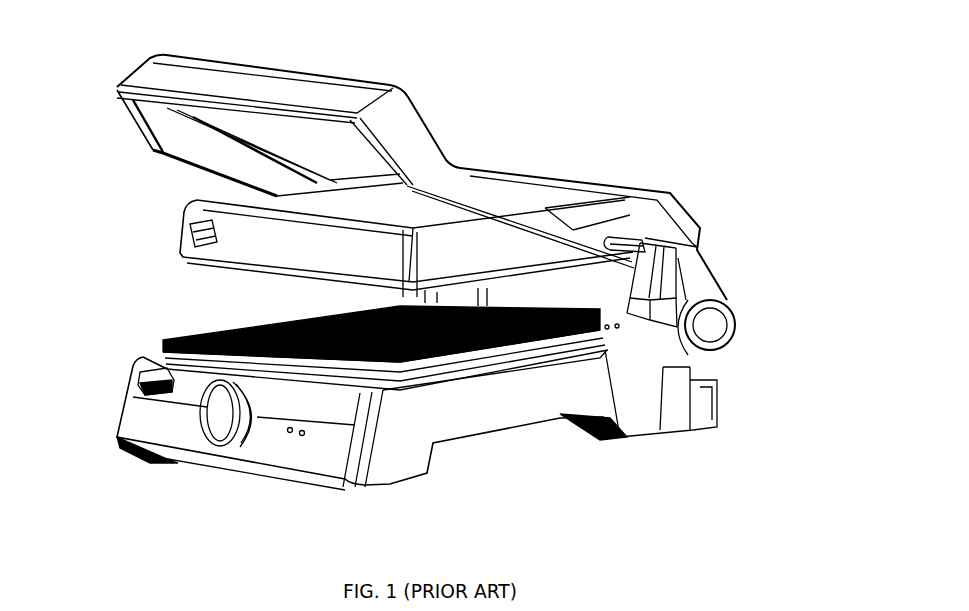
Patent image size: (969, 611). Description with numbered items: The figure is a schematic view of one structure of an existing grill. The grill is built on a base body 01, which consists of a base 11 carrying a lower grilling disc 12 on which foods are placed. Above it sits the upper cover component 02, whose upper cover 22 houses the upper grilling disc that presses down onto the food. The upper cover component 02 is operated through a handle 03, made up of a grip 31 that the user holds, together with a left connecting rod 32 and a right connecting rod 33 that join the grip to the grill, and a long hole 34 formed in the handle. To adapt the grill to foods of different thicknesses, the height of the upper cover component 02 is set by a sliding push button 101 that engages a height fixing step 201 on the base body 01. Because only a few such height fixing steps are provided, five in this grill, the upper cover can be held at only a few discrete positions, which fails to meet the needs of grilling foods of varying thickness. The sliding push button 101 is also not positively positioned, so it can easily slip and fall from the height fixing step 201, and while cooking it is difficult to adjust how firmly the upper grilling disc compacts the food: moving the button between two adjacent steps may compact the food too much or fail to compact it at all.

The base body 01 is at (381, 366).
The upper cover component 02 is at (627, 199).
The handle 03 is at (341, 156).
The base 11 is at (487, 413).
The lower grilling disc 12 is at (235, 327).
The upper cover 22 is at (545, 190).
The grip 31 is at (250, 87).
The left connecting rod 32 is at (260, 177).
The right connecting rod 33 is at (573, 230).
The long hole 34 is at (642, 240).
The sliding push button 101 is at (700, 260).
The height fixing step 201 is at (633, 340).